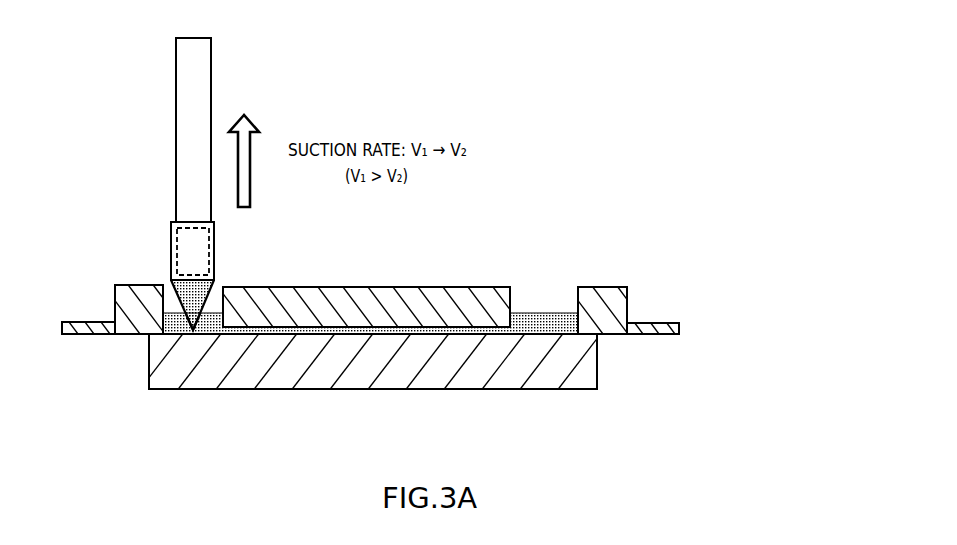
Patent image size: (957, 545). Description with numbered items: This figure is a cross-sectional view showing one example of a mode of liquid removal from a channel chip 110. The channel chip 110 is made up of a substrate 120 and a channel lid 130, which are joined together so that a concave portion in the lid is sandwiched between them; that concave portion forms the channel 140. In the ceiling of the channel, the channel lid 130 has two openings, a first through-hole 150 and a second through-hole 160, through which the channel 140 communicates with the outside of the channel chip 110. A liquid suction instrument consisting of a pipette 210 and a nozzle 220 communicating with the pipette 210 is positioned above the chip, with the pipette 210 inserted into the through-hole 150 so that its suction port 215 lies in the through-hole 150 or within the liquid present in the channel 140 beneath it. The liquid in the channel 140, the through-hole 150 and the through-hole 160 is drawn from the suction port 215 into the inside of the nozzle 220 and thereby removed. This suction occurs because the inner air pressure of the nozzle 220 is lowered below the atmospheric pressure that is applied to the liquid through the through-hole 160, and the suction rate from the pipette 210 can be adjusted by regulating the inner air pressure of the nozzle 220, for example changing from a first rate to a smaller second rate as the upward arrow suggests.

The channel chip 110 is at (668, 278).
The substrate 120 is at (527, 386).
The channel lid 130 is at (668, 338).
The channel 140 is at (462, 324).
The through-hole 150 is at (214, 293).
The through-hole 160 is at (570, 293).
The pipette 210 is at (170, 245).
The suction port 215 is at (193, 333).
The nozzle 220 is at (176, 90).